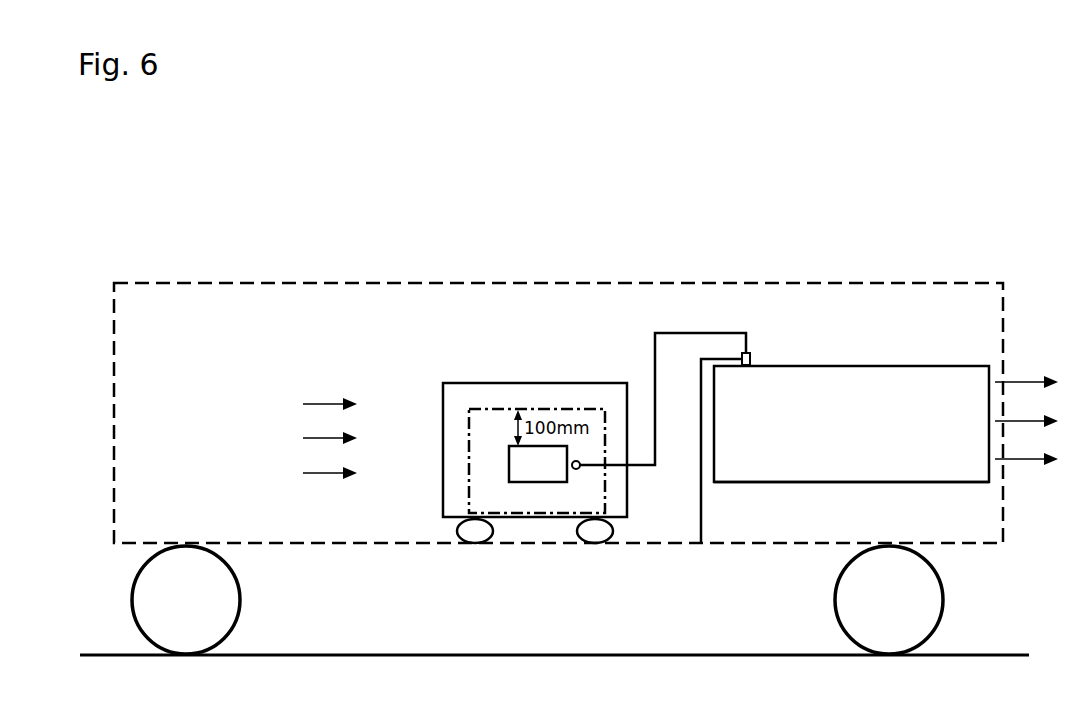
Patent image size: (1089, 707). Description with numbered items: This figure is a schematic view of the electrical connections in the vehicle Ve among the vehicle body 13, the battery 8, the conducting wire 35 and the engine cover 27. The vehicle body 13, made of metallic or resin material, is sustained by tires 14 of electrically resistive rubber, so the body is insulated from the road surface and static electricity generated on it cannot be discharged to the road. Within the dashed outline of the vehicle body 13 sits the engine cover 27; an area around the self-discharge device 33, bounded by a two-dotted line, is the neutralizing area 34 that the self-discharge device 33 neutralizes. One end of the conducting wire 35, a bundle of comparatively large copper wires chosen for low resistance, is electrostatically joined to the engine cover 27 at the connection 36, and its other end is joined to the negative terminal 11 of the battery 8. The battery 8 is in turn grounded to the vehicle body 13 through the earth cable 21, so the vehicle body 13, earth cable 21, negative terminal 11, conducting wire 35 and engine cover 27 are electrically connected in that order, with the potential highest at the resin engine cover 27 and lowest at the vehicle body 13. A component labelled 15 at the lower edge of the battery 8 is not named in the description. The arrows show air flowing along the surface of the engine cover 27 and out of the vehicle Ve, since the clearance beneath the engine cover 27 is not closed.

The vehicle Ve is at (362, 250).
The vehicle body 13 is at (541, 282).
The tires 14 is at (240, 599).
The battery 8 is at (870, 320).
The lower wall 15 is at (731, 476).
The negative terminal 11 is at (751, 357).
The conducting wire 35 is at (695, 333).
The earth cable 21 is at (699, 523).
The engine cover 27 is at (587, 383).
The neutralizing area 34 is at (469, 424).
The self-discharge device 33 is at (509, 466).
The connection 36 is at (576, 470).